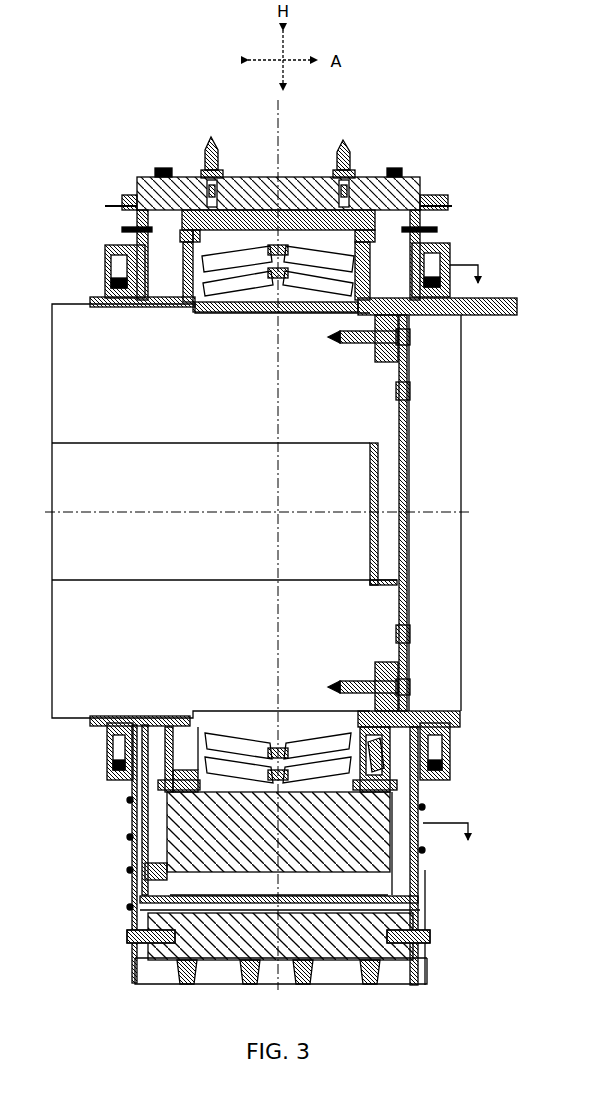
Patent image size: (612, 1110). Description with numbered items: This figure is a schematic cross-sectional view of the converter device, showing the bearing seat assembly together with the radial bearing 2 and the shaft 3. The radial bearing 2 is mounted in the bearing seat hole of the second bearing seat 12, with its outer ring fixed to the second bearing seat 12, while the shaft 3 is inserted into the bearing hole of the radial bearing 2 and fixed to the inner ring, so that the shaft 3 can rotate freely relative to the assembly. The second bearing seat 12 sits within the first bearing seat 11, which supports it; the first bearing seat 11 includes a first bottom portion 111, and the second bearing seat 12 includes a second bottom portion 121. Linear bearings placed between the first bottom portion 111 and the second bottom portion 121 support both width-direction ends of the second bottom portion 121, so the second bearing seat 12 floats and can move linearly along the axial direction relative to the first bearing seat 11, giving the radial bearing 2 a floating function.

The radial bearing 2 is at (377, 176).
The first bearing seat 11 is at (233, 176).
The second bearing seat 12 is at (318, 177).
The shaft 3 is at (377, 422).
The second bottom portion 121 is at (132, 890).
The first bottom portion 111 is at (317, 947).